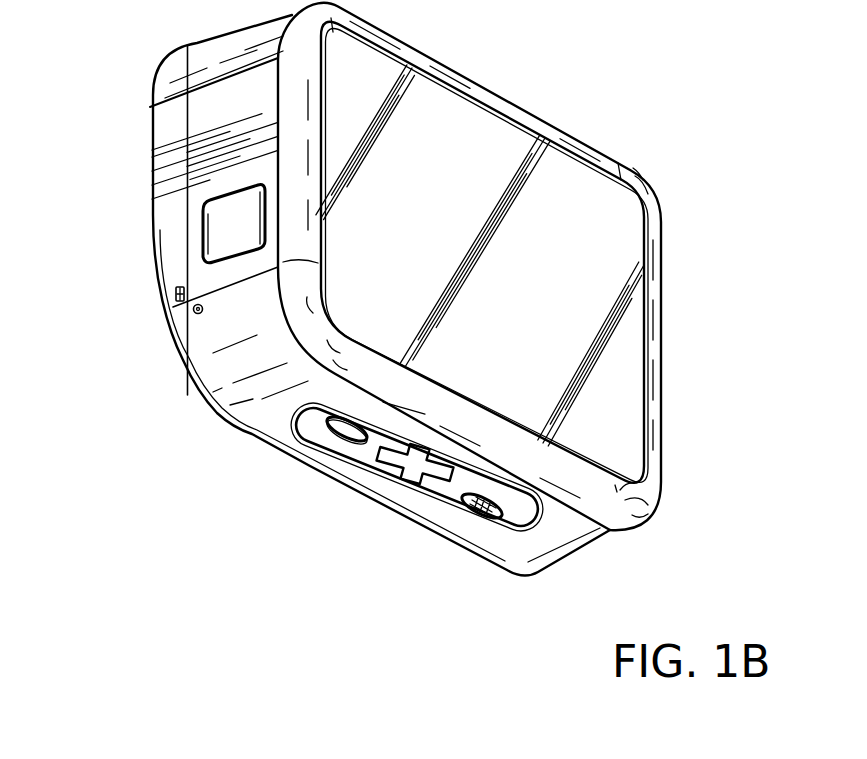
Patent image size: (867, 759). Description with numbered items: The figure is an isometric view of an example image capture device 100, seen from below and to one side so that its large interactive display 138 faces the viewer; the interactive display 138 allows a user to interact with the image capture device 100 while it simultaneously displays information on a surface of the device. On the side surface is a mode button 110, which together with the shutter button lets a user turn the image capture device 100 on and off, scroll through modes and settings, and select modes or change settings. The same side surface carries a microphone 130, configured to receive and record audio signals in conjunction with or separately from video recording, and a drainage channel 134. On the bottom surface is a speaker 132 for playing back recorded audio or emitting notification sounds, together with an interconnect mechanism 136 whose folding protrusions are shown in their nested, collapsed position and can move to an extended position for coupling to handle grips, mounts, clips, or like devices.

The image capture device 100 is at (405, 289).
The mode button 110 is at (217, 230).
The microphone 130 is at (195, 313).
The speaker 132 is at (482, 512).
The drainage channel 134 is at (177, 294).
The interconnect mechanism 136 is at (350, 449).
The interactive display 138 is at (620, 382).